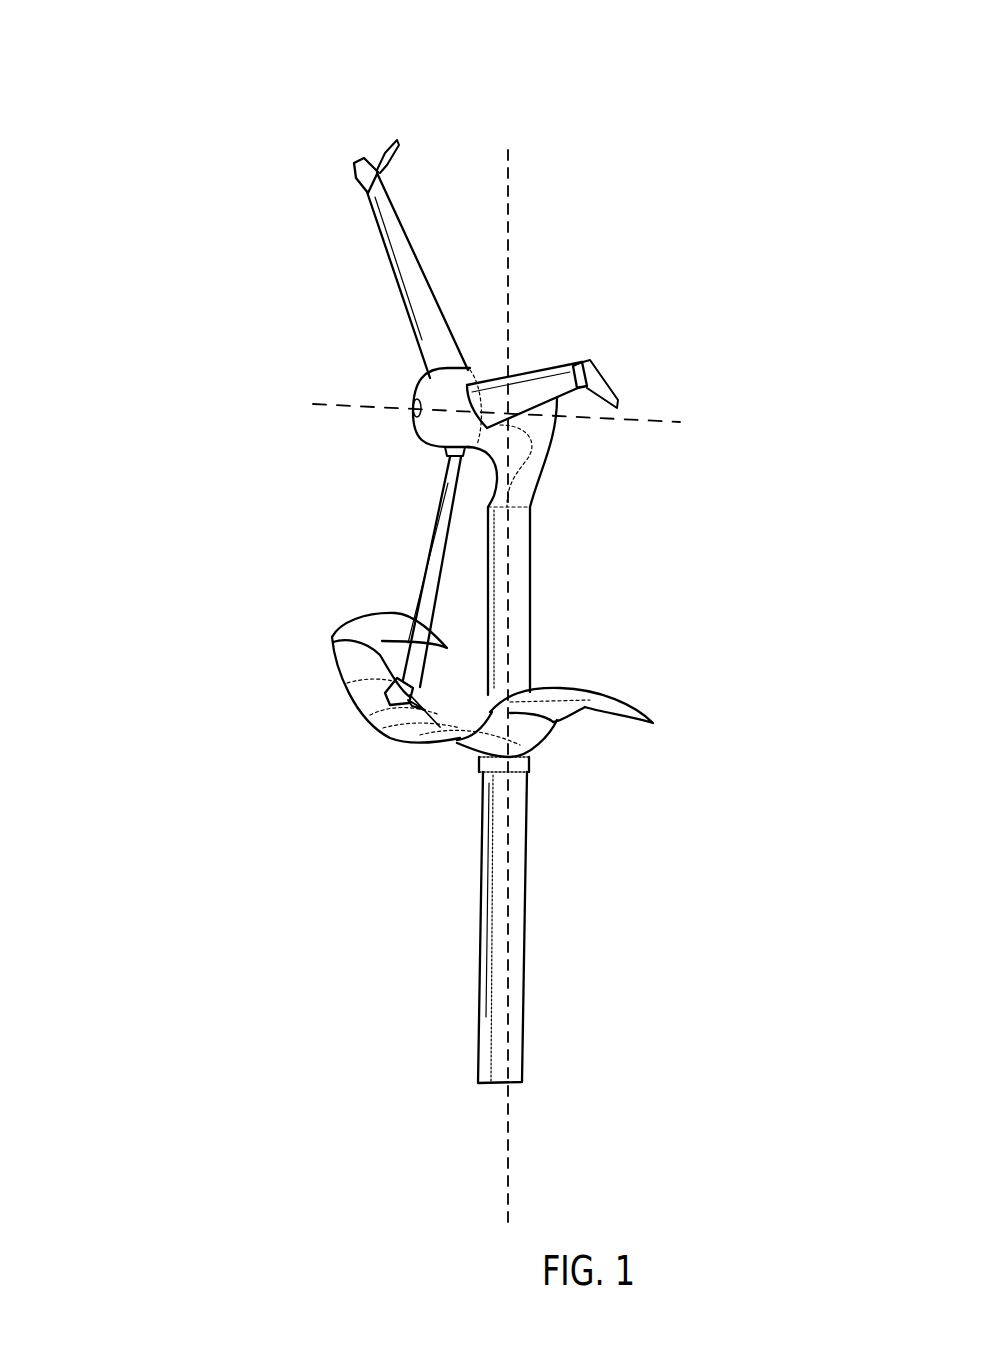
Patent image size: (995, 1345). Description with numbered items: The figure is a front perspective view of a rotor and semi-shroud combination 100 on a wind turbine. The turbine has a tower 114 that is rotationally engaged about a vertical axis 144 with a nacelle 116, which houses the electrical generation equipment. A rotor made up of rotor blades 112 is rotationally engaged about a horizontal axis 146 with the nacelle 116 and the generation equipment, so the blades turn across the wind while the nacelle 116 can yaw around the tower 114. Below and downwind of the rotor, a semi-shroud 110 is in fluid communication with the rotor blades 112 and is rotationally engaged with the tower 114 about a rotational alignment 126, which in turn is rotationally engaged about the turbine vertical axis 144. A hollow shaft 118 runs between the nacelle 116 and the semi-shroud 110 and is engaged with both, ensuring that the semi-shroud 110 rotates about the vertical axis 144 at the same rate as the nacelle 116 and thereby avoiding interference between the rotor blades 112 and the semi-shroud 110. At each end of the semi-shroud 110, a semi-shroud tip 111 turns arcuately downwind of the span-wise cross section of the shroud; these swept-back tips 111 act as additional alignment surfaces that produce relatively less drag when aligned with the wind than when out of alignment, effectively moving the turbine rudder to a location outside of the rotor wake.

The wind turbine 100 is at (117, 47).
The semi-shroud 110 is at (479, 651).
The semi-shroud tip 111 is at (395, 622).
The rotor blade 112 is at (402, 257).
The tower 114 is at (508, 917).
The nacelle 116 is at (447, 397).
The hollow shaft 118 is at (522, 572).
The rotational alignment 126 is at (527, 765).
The vertical axis 144 is at (510, 163).
The horizontal axis 146 is at (363, 412).